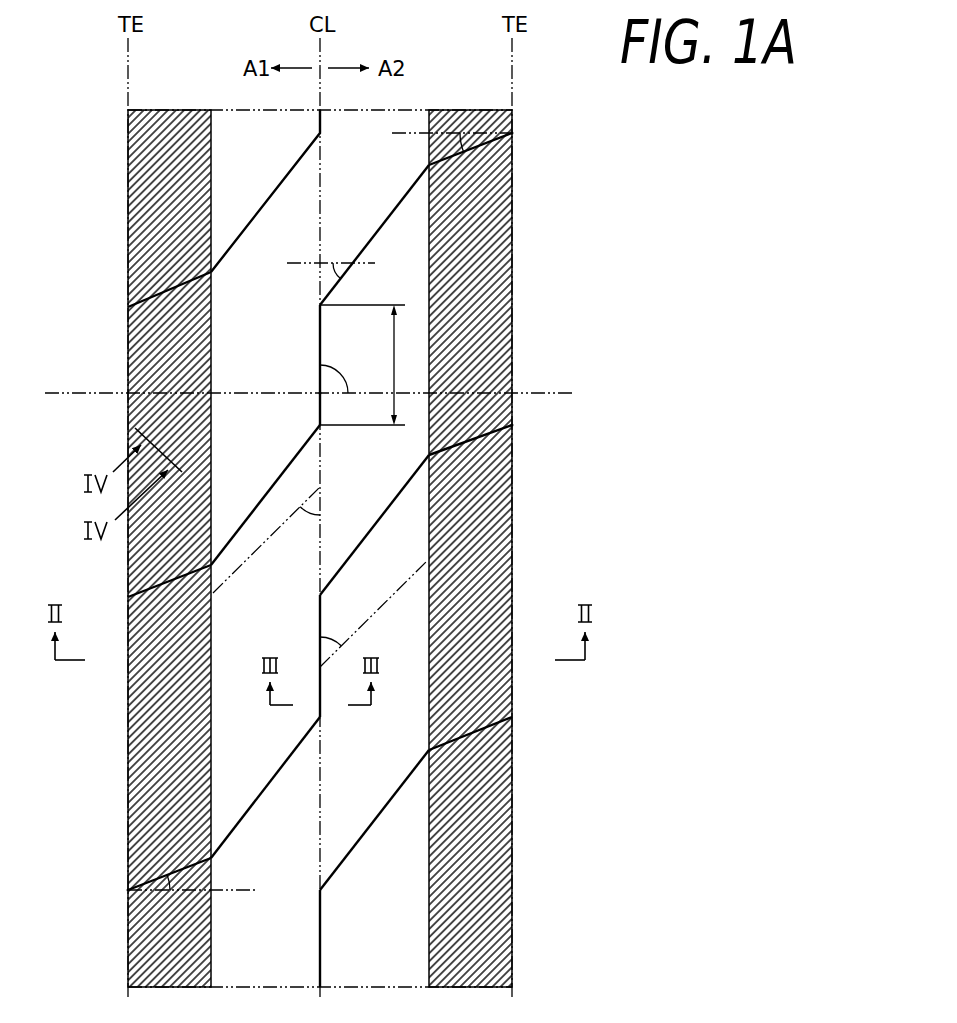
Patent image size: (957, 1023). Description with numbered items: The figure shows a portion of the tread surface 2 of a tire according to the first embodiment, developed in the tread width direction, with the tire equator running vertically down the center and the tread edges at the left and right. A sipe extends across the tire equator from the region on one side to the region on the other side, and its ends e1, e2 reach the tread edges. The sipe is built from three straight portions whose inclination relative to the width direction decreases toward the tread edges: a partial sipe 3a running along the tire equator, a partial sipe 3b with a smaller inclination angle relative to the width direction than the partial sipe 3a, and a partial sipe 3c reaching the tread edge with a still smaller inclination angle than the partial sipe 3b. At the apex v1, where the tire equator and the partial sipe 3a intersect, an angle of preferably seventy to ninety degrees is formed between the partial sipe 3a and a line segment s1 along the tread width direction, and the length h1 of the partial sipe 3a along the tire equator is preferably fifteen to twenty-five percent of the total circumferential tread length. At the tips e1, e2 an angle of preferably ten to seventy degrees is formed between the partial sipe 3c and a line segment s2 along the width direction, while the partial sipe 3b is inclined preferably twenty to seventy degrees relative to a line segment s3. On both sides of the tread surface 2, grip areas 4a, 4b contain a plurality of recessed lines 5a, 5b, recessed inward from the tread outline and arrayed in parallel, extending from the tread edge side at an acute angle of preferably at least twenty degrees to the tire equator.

The tread surface 2 is at (321, 548).
The partial sipe 3a is at (318, 345).
The partial sipe 3b is at (378, 233).
The partial sipe 3c is at (466, 150).
The grip area 4a is at (158, 210).
The grip area 4b is at (476, 233).
The recessed line 5a is at (155, 353).
The recessed line 5b is at (478, 336).
The end of sipe e1 is at (115, 891).
The end of sipe e2 is at (527, 281).
The line segment s1 is at (323, 395).
The line segment s2 is at (320, 512).
The line segment s3 is at (319, 263).
The apex v1 is at (318, 392).
The length h1 is at (372, 365).